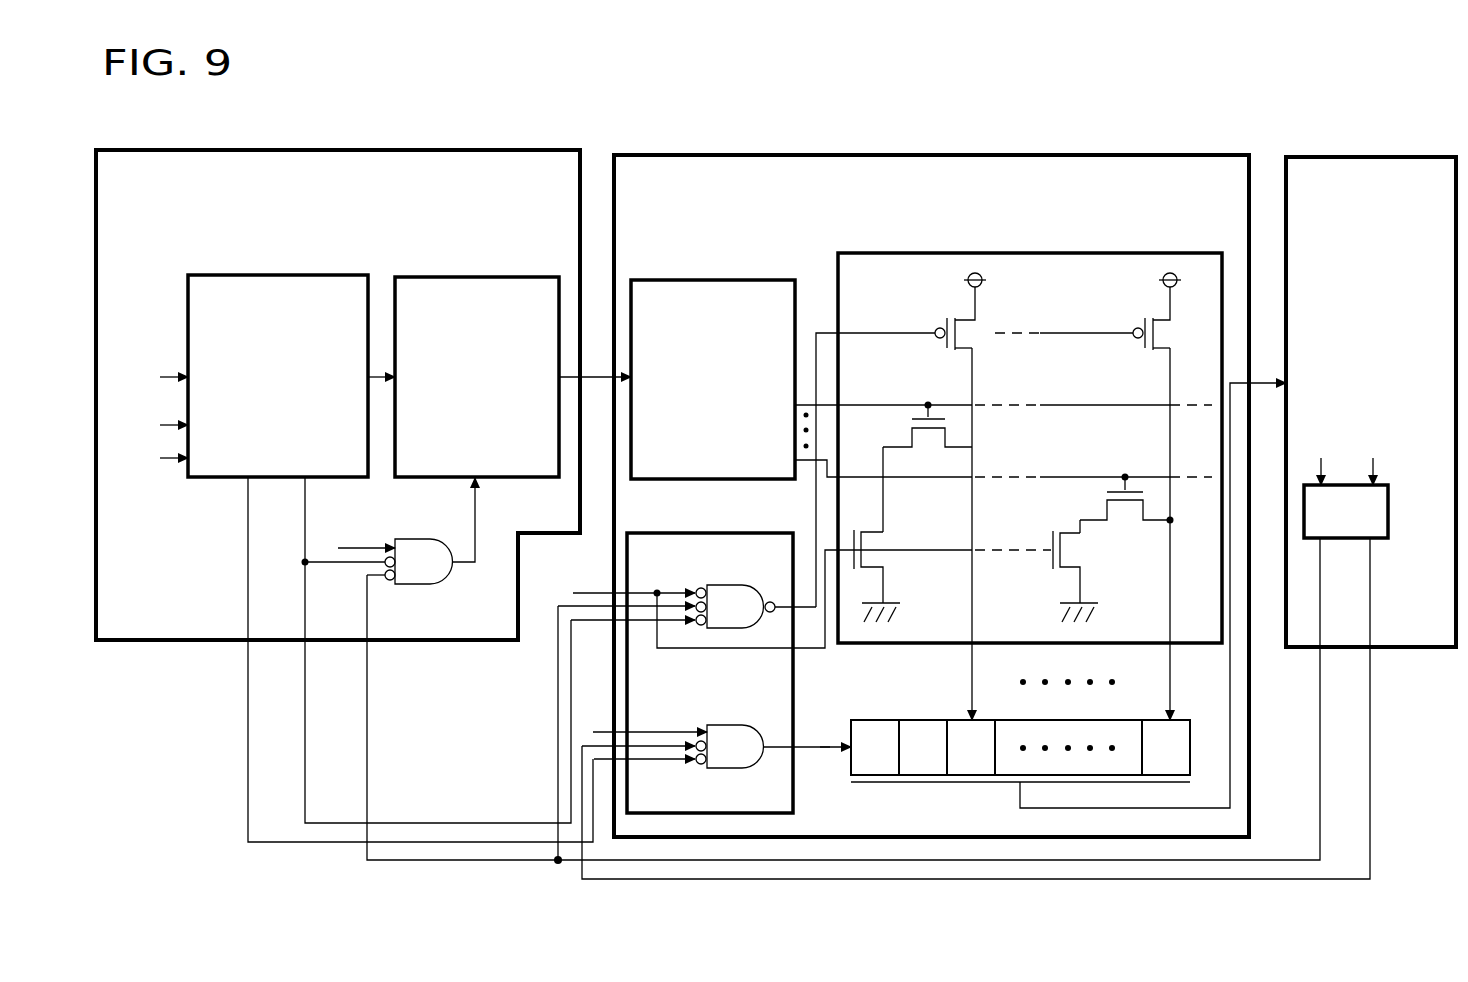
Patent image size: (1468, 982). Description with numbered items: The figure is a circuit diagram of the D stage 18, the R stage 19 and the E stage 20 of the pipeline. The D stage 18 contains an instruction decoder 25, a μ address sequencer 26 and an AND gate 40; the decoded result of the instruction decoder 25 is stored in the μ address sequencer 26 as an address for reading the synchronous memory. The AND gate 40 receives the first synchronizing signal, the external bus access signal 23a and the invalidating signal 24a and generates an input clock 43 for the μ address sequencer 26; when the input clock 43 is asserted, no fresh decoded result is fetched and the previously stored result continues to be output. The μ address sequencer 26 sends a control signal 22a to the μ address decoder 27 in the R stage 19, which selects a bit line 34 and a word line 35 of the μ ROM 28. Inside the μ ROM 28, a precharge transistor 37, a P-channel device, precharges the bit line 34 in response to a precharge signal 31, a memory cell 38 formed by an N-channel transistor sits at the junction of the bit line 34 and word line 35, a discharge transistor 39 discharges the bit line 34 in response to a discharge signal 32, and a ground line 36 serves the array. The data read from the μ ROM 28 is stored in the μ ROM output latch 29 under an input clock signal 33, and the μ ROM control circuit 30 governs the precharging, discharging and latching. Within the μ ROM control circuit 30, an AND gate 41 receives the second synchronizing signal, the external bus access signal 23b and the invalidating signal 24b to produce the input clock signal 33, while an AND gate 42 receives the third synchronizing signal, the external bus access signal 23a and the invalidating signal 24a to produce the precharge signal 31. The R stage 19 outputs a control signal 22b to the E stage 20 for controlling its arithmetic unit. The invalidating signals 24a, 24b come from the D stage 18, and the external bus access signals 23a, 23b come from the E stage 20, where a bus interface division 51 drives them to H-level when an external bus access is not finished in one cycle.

The D stage 18 is at (426, 150).
The R stage 19 is at (905, 155).
The E stage 20 is at (1376, 157).
The control signal 22a is at (594, 375).
The control signal 22b is at (1268, 381).
The external bus access signal 23a is at (1318, 825).
The external bus access signal 23b is at (1368, 838).
The invalidating signal 24a is at (498, 823).
The invalidating signal 24b is at (297, 845).
The instruction decoder 25 is at (275, 275).
The μ address sequencer 26 is at (477, 277).
The μ address decoder 27 is at (713, 280).
The μ ROM 28 is at (1030, 253).
The μ ROM output latch 29 is at (1190, 727).
The μ ROM control circuit 30 is at (682, 531).
The precharge signal 31 is at (820, 333).
The discharge signal 32 is at (818, 652).
The input clock signal 33 is at (818, 752).
The bit line 34 is at (975, 607).
The word line 35 is at (822, 418).
The ground line 36 is at (883, 462).
The precharge transistor 37 is at (945, 320).
The memory cell 38 is at (957, 437).
The discharge transistor 39 is at (887, 540).
The AND gate 40 is at (440, 583).
The AND gate 41 is at (722, 725).
The AND gate 42 is at (722, 585).
The input clock 43 is at (477, 505).
The bus interface division 51 is at (1390, 517).